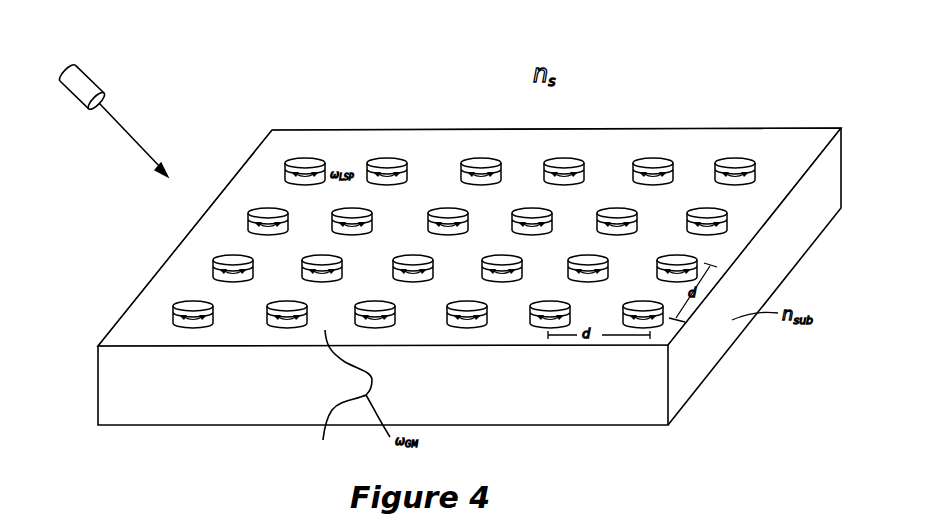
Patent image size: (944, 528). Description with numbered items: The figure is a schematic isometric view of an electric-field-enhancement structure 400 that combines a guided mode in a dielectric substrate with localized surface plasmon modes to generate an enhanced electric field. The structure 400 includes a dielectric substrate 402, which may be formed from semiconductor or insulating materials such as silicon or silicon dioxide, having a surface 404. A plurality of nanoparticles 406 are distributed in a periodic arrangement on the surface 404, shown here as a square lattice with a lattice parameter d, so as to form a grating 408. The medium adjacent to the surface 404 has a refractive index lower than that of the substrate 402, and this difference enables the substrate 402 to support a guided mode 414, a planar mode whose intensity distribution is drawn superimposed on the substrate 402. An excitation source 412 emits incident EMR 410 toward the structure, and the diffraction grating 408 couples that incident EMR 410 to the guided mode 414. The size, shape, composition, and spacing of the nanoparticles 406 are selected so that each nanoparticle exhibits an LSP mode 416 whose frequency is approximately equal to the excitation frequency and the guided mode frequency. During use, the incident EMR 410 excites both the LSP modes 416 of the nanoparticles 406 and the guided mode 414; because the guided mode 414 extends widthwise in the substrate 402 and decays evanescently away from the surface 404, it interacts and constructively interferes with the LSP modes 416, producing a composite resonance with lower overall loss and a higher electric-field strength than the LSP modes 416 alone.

The electric-field-enhancement structure 400 is at (780, 50).
The dielectric substrate 402 is at (786, 261).
The surface 404 is at (750, 137).
The nanoparticles 406 is at (655, 158).
The grating 408 is at (185, 265).
The incident EMR 410 is at (115, 118).
The excitation source 412 is at (79, 78).
The guided mode 414 is at (386, 373).
The LSP mode 416 is at (326, 168).